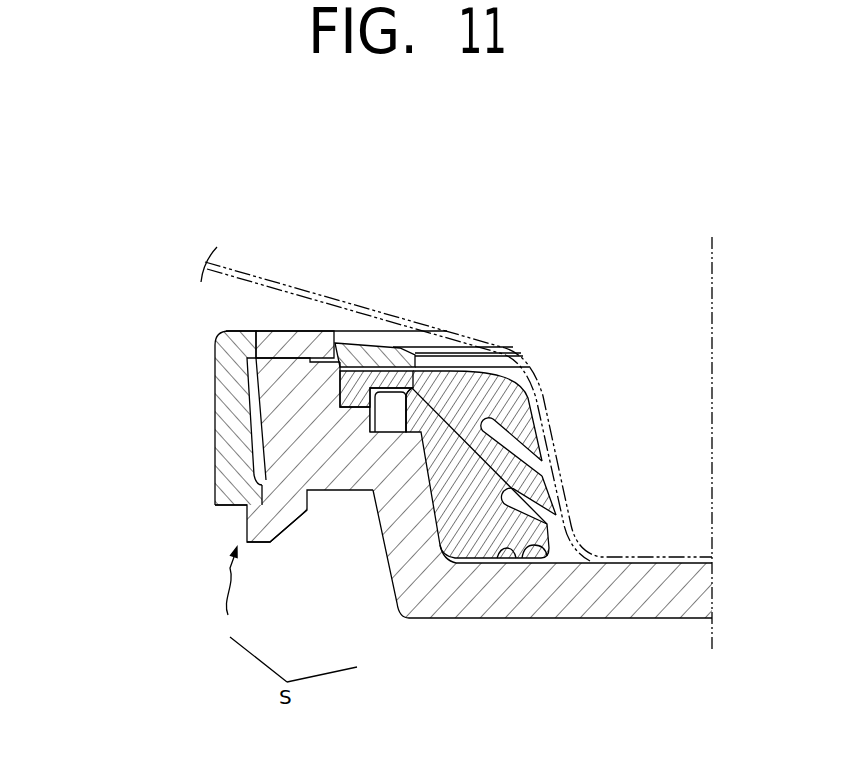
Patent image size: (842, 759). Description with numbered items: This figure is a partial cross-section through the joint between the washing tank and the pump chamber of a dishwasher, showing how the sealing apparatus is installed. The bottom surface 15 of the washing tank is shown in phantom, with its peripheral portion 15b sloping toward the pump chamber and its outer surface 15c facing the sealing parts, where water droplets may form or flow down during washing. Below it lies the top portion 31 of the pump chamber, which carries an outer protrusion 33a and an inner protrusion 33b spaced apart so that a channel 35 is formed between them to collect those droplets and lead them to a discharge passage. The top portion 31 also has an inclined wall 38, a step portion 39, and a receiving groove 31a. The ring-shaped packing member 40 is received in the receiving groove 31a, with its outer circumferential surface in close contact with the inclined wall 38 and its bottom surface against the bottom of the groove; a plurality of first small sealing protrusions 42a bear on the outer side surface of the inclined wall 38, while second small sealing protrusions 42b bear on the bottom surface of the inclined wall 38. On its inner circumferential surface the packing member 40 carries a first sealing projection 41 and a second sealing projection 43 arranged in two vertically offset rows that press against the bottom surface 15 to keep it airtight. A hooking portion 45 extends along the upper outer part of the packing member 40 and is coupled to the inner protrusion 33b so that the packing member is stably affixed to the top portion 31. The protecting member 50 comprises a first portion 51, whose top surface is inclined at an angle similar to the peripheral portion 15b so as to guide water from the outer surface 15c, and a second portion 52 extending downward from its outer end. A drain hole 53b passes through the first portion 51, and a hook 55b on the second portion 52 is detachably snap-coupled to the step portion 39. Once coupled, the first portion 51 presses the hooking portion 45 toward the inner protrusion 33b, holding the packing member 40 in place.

The bottom surface 15 is at (520, 338).
The peripheral portion 15b is at (377, 300).
The outer surface 15c is at (408, 312).
The top portion 31 is at (462, 632).
The receiving groove 31a is at (549, 562).
The outer protrusion 33a is at (278, 400).
The inner protrusion 33b is at (405, 390).
The channel 35 is at (340, 418).
The inclined wall 38 is at (396, 540).
The step portion 39 is at (333, 492).
The packing member 40 is at (437, 547).
The first sealing projection 41 is at (530, 430).
The first small sealing protrusions 42a is at (415, 435).
The second small sealing protrusions 42b is at (458, 540).
The second sealing projection 43 is at (535, 492).
The hooking portion 45 is at (408, 398).
The protecting member 50 is at (222, 595).
The first portion 51 is at (363, 340).
The second portion 52 is at (232, 418).
The drain hole 53b is at (275, 343).
The hook 55b is at (270, 512).